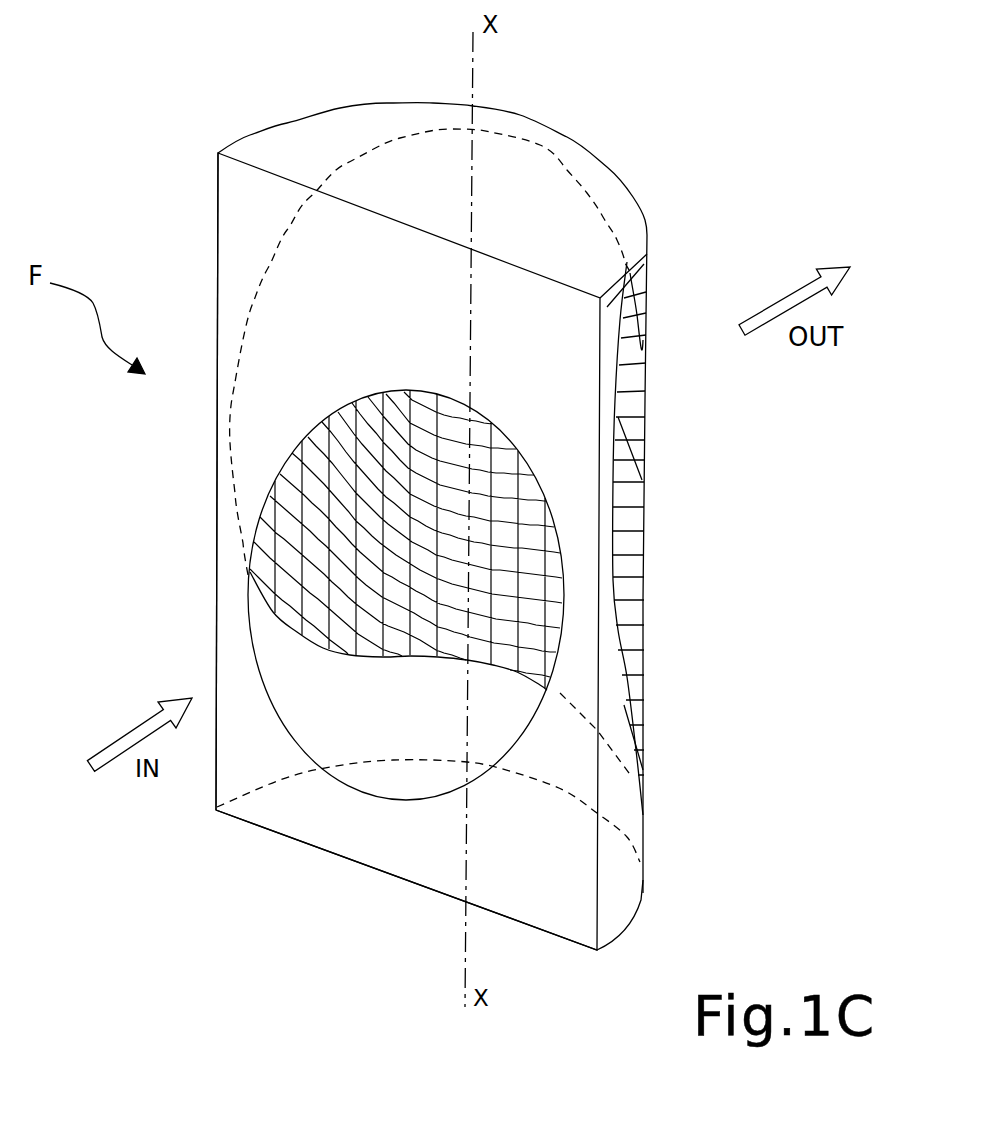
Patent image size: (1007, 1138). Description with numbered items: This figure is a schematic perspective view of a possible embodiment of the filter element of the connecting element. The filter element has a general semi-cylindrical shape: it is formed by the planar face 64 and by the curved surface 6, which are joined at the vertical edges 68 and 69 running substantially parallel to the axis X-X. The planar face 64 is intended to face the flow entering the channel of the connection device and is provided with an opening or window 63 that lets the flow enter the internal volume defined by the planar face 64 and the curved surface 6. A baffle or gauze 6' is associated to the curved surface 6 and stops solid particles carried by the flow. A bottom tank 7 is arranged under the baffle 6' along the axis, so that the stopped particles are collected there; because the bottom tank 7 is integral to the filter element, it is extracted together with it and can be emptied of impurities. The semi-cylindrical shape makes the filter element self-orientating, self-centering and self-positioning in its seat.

The curved surface 6 is at (498, 498).
The baffle 6' is at (708, 534).
The bottom tank 7 is at (405, 765).
The opening or window 63 is at (513, 466).
The planar face 64 is at (303, 373).
The vertical edge 68 is at (217, 267).
The vertical edge 69 is at (597, 900).